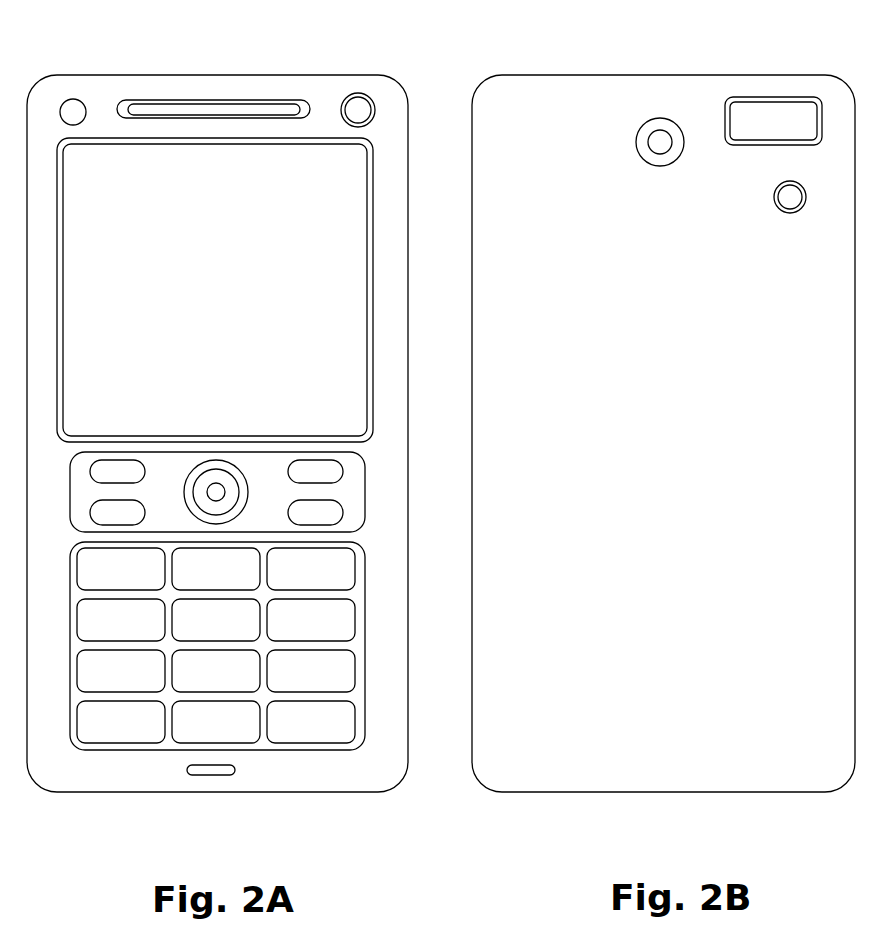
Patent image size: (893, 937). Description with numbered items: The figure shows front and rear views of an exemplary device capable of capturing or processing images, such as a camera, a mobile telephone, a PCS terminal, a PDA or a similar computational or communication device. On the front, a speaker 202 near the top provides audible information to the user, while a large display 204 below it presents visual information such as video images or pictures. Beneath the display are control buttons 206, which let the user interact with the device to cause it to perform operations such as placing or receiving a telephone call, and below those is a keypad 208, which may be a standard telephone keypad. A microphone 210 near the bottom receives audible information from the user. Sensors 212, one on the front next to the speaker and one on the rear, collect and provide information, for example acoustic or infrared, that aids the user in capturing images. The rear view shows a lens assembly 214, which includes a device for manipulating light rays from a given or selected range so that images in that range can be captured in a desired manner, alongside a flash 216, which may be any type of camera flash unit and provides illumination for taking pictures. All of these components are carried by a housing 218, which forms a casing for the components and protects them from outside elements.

In FIG. 2A, the speaker 202 is at (197, 100).
In FIG. 2A, the display 204 is at (323, 138).
In FIG. 2A, the control buttons 206 is at (365, 492).
In FIG. 2A, the keypad 208 is at (333, 645).
In FIG. 2A, the microphone 210 is at (235, 770).
In FIG. 2A, the sensors 212 is at (398, 194).
In FIG. 2B, the sensors 212 is at (774, 197).
In FIG. 2B, the lens assembly 214 is at (660, 118).
In FIG. 2B, the flash 216 is at (792, 97).
In FIG. 2A, the housing 218 is at (337, 792).
In FIG. 2B, the housing 218 is at (528, 792).